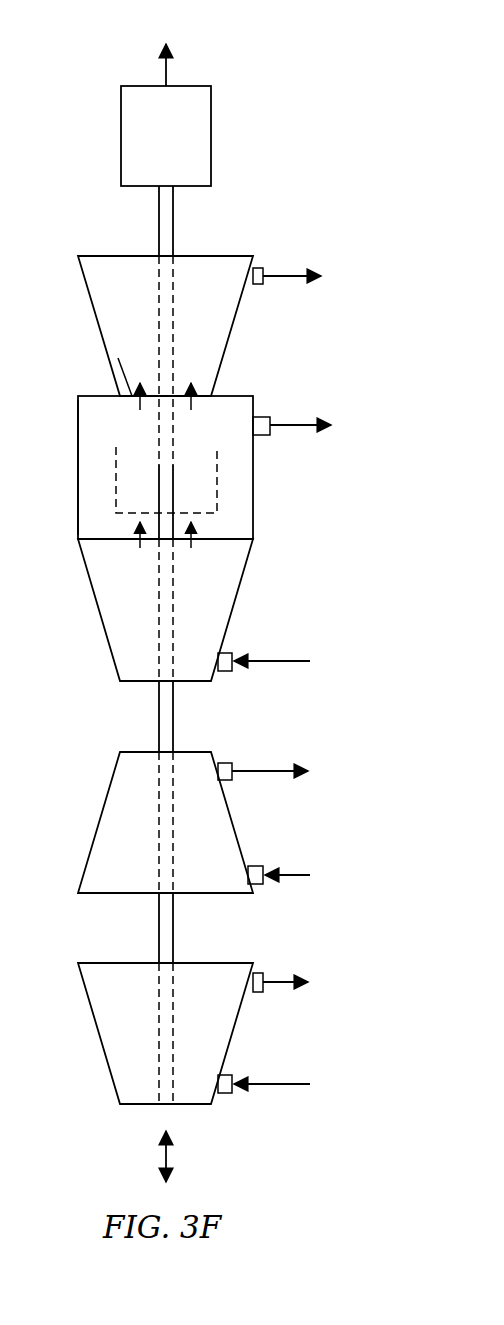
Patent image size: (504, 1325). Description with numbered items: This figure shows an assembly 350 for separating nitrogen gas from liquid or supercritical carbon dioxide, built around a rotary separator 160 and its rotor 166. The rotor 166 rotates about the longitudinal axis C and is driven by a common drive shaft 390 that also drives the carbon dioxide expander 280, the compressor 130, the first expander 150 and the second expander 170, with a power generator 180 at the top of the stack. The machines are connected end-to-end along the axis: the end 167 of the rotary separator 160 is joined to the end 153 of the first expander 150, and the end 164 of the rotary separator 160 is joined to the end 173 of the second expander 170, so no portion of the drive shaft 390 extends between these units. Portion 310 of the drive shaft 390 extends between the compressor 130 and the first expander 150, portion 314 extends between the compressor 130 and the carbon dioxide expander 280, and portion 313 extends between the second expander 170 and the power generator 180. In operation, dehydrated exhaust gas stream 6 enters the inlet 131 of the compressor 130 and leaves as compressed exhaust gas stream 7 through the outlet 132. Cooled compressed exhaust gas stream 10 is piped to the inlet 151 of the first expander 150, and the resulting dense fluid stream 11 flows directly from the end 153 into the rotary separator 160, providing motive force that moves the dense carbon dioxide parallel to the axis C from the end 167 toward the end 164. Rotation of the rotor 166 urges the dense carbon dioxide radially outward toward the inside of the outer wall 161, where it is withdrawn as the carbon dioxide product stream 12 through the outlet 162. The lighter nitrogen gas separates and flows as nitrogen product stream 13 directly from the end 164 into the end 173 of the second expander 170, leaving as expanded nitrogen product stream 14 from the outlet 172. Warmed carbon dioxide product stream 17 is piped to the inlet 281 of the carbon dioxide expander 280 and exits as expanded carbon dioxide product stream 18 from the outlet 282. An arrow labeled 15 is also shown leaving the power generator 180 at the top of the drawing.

The assembly 350 is at (84, 20).
The power generator 180 is at (121, 86).
The outlet stream 15 is at (170, 66).
The portion of drive shaft 313 is at (159, 224).
The second expander 170 is at (96, 316).
The expanded nitrogen product stream 14 is at (285, 276).
The outlet of the second expander 172 is at (262, 284).
The end of the second expander 173 is at (118, 358).
The nitrogen product stream 13 is at (140, 410).
The end of the rotary separator 164 is at (202, 408).
The CO2 product stream 12 is at (295, 425).
The outlet on the outer wall 162 is at (266, 435).
The outer wall 161 is at (78, 458).
The rotary separator 160 is at (78, 490).
The rotor 166 is at (217, 480).
The end of the rotary separator 167 is at (238, 539).
The dense fluid stream 11 is at (140, 547).
The end of the first expander 153 is at (214, 539).
The first expander 150 is at (98, 608).
The cooled compressed exhaust gas stream 10 is at (275, 661).
The inlet of the first expander 151 is at (228, 671).
The drive shaft 390 is at (159, 716).
The portion of drive shaft 310 is at (173, 716).
The compressed exhaust gas stream 7 is at (272, 771).
The outlet of the compressor 132 is at (238, 780).
The compressor 130 is at (99, 804).
The inlet of the compressor 131 is at (258, 866).
The dehydrated exhaust gas stream 6 is at (292, 875).
The portion of drive shaft 314 is at (159, 930).
The expanded CO2 product stream 18 is at (276, 982).
The outlet of the CO2 expander 282 is at (260, 992).
The CO2 expander 280 is at (99, 1032).
The inlet of the CO2 expander 281 is at (232, 1075).
The warmed CO2 product stream 17 is at (278, 1084).
The longitudinal axis C is at (170, 1158).